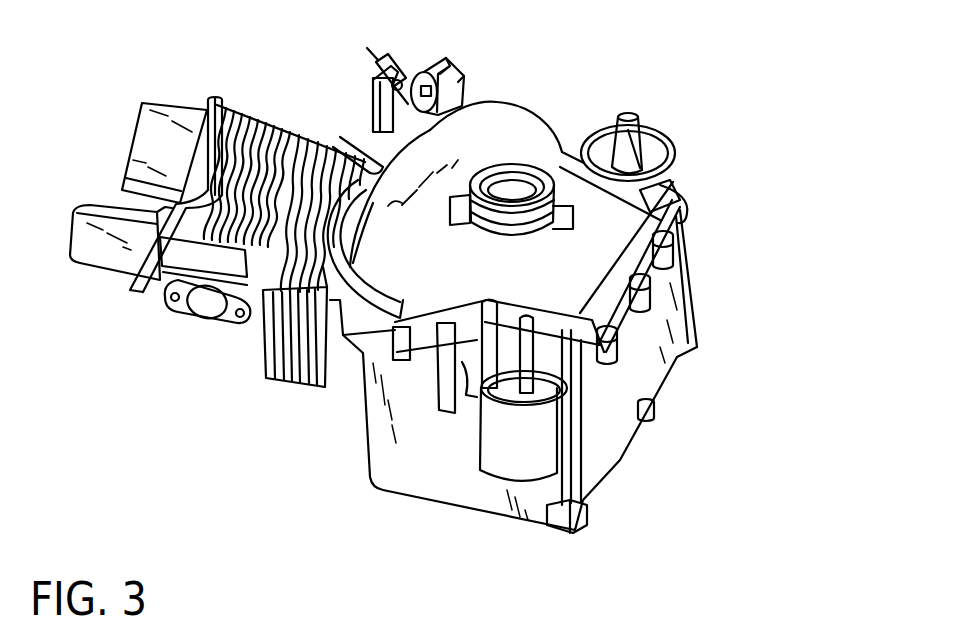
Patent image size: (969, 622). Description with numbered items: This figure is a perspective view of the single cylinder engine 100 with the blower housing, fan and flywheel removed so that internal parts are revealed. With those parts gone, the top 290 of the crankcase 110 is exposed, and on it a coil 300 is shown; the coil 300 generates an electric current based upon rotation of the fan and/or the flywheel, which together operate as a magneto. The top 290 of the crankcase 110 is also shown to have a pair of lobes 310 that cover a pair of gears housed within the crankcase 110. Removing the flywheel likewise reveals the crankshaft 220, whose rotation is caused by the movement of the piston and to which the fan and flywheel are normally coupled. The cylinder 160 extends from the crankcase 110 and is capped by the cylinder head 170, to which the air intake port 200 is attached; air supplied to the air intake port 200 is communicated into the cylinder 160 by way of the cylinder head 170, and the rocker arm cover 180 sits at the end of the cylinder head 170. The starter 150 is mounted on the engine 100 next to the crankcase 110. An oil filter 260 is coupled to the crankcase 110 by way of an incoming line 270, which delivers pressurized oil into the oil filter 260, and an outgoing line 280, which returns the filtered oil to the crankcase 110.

The single cylinder engine 100 is at (241, 449).
The crankcase 110 is at (423, 497).
The starter 150 is at (676, 178).
The cylinder 160 is at (297, 385).
The cylinder head 170 is at (262, 135).
The rocker arm cover 180 is at (85, 270).
The air intake port 200 is at (178, 308).
The crankshaft 220 is at (507, 200).
The oil filter 260 is at (563, 430).
The incoming line 270 is at (468, 392).
The outgoing line 280 is at (524, 318).
The top of the crankcase 290 is at (500, 110).
The coil 300 is at (397, 56).
The lobes 310 is at (348, 146).